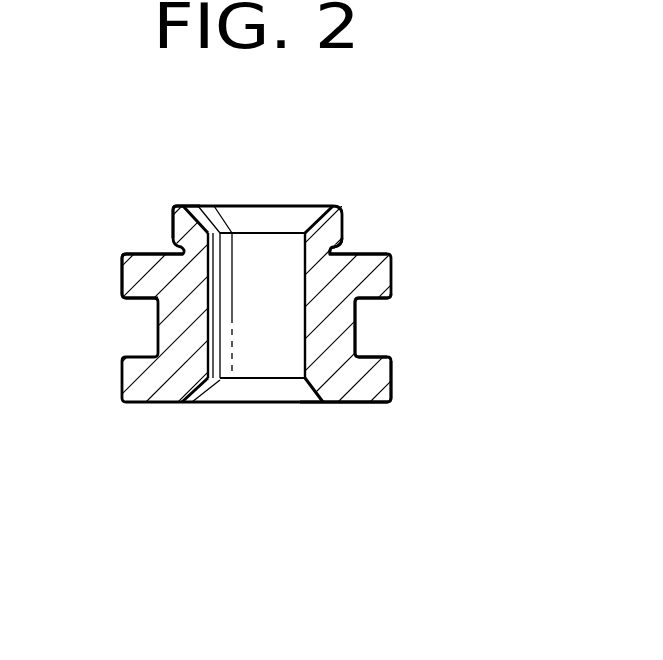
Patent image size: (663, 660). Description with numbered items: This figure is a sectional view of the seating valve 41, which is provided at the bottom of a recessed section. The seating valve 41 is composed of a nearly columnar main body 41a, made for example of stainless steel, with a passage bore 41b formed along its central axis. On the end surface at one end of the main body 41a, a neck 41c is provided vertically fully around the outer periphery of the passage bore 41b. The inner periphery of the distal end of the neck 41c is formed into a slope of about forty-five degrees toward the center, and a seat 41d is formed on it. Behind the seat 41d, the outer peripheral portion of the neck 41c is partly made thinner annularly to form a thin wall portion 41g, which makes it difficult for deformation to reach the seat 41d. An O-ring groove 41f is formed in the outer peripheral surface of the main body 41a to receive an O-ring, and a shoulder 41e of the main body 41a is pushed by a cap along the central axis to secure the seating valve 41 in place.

The seating valve 41 is at (303, 206).
The main body 41a is at (390, 380).
The passage bore 41b is at (304, 357).
The neck 41c is at (174, 210).
The seat 41d is at (222, 205).
The shoulder 41e is at (155, 254).
The O-ring groove 41f is at (378, 305).
The thin wall portion 41g is at (335, 245).